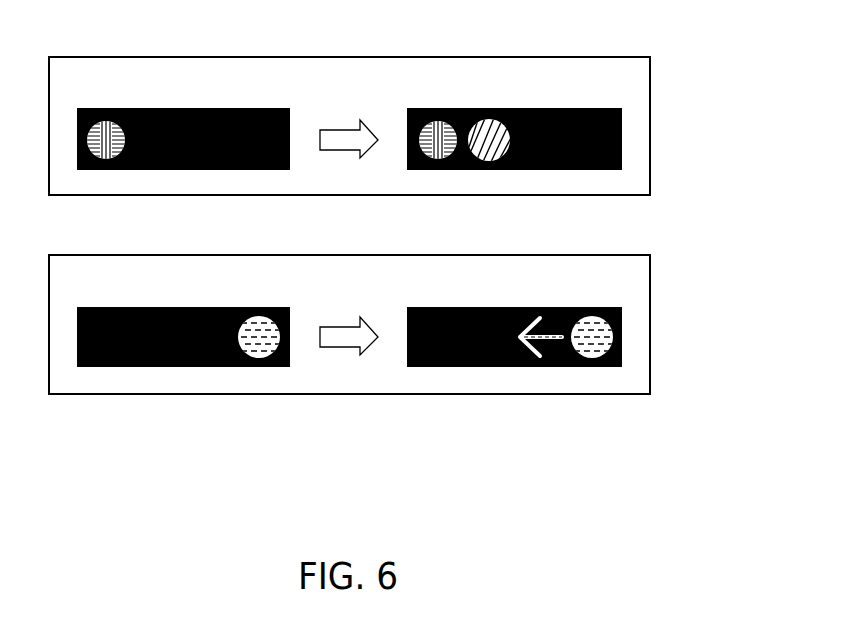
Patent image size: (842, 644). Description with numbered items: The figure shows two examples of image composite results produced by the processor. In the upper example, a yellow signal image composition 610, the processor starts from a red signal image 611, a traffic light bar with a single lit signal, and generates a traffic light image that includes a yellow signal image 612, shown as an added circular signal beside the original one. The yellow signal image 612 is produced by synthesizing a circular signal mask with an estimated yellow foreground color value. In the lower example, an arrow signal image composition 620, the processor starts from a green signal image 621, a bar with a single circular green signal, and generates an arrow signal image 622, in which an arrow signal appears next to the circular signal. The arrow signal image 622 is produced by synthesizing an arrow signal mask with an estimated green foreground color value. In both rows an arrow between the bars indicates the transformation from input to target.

The yellow signal image composition 610 is at (650, 125).
The red signal image 611 is at (183, 108).
The yellow signal image 612 is at (513, 108).
The arrow signal image composition 620 is at (650, 323).
The green signal image 621 is at (183, 307).
The arrow signal image 622 is at (515, 307).